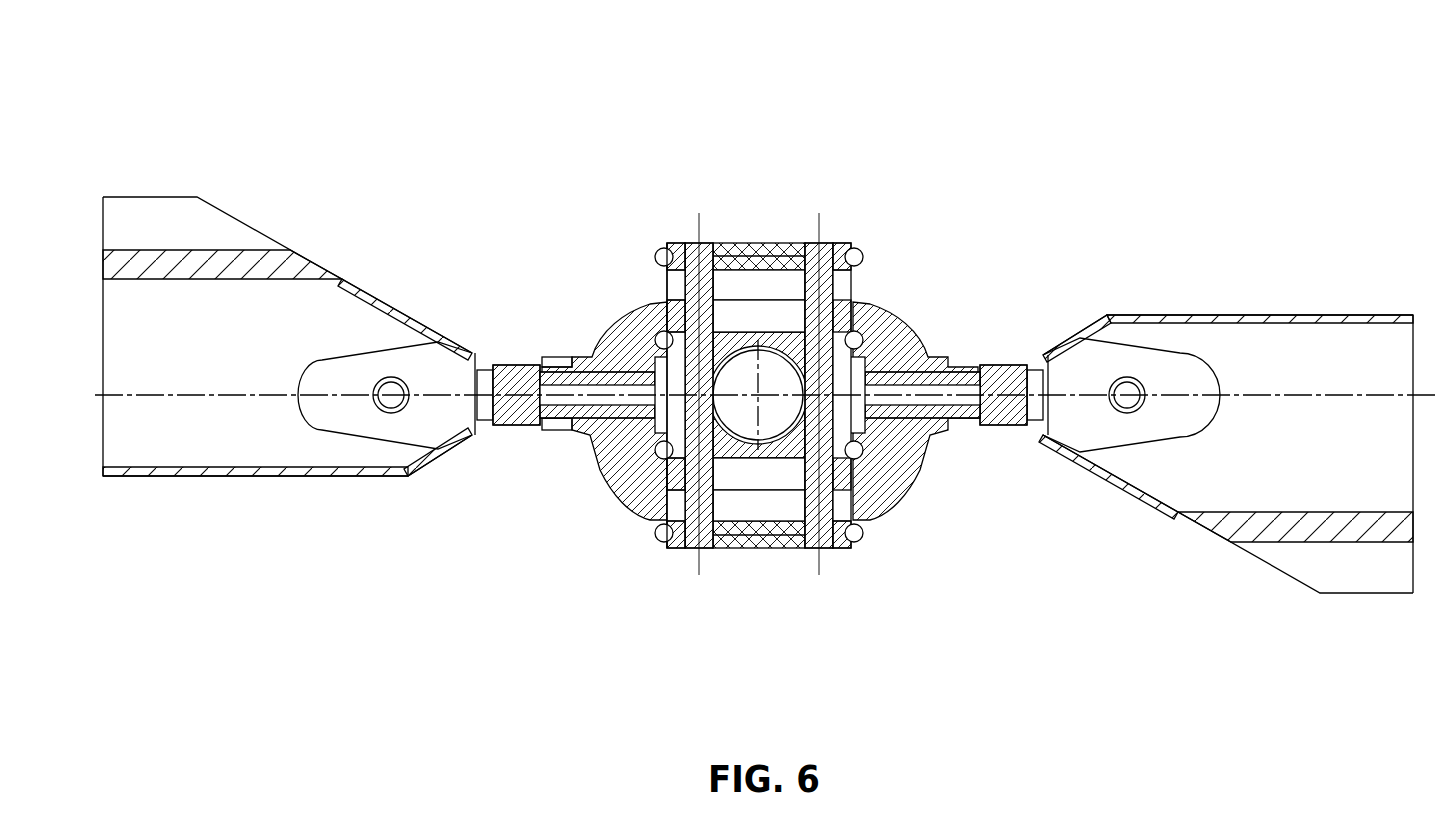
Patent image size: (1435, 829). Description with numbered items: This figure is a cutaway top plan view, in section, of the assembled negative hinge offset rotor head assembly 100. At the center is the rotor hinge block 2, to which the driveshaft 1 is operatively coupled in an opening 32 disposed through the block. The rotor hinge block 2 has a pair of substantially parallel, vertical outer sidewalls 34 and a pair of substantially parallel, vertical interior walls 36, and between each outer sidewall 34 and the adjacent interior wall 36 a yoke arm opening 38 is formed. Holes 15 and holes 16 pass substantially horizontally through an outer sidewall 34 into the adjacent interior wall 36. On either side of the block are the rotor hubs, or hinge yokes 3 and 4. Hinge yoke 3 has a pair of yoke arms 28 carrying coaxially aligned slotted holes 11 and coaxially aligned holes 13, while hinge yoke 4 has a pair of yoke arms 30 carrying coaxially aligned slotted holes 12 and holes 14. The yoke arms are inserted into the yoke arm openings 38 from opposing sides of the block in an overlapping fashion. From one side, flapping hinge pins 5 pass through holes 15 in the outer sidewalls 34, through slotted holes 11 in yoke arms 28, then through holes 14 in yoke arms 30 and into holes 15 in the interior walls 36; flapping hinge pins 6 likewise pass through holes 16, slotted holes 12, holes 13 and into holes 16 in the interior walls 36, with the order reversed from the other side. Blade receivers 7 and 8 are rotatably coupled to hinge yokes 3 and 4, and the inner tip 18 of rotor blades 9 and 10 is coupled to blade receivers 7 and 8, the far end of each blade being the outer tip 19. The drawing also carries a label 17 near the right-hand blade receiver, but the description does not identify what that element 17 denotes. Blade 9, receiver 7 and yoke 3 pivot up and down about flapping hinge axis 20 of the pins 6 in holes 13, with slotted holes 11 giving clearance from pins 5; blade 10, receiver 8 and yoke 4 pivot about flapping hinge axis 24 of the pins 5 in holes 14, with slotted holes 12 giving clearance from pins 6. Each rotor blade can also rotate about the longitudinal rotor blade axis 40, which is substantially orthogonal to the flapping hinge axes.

The negative hinge offset rotor head assembly 100 is at (742, 50).
The driveshaft 1 is at (748, 370).
The rotor hinge block 2 is at (750, 243).
The hinge yoke 3 is at (585, 325).
The hinge yoke 4 is at (953, 330).
The flapping hinge pin 5 is at (695, 243).
The flapping hinge pin 6 is at (845, 243).
The blade receiver 7 is at (500, 425).
The blade receiver 8 is at (1022, 430).
The rotor blade 9 is at (167, 197).
The rotor blade 10 is at (1285, 315).
The slotted hole 11 is at (680, 318).
The slotted hole 12 is at (840, 312).
The hole 13 is at (772, 400).
The hole 14 is at (676, 272).
The hole 15 is at (678, 332).
The hole 16 is at (843, 282).
The shaft head 17 is at (855, 420).
The inner tip 18 is at (385, 332).
The outer tip 19 is at (104, 197).
The flapping hinge axis 20 is at (833, 242).
The flapping hinge axis 24 is at (699, 218).
The yoke arm 28 is at (762, 318).
The yoke arm 30 is at (822, 213).
The opening 32 is at (640, 450).
The outer sidewall 34 is at (722, 243).
The interior wall 36 is at (778, 338).
The yoke arm opening 38 is at (786, 286).
The longitudinal rotor blade axis 40 is at (230, 395).